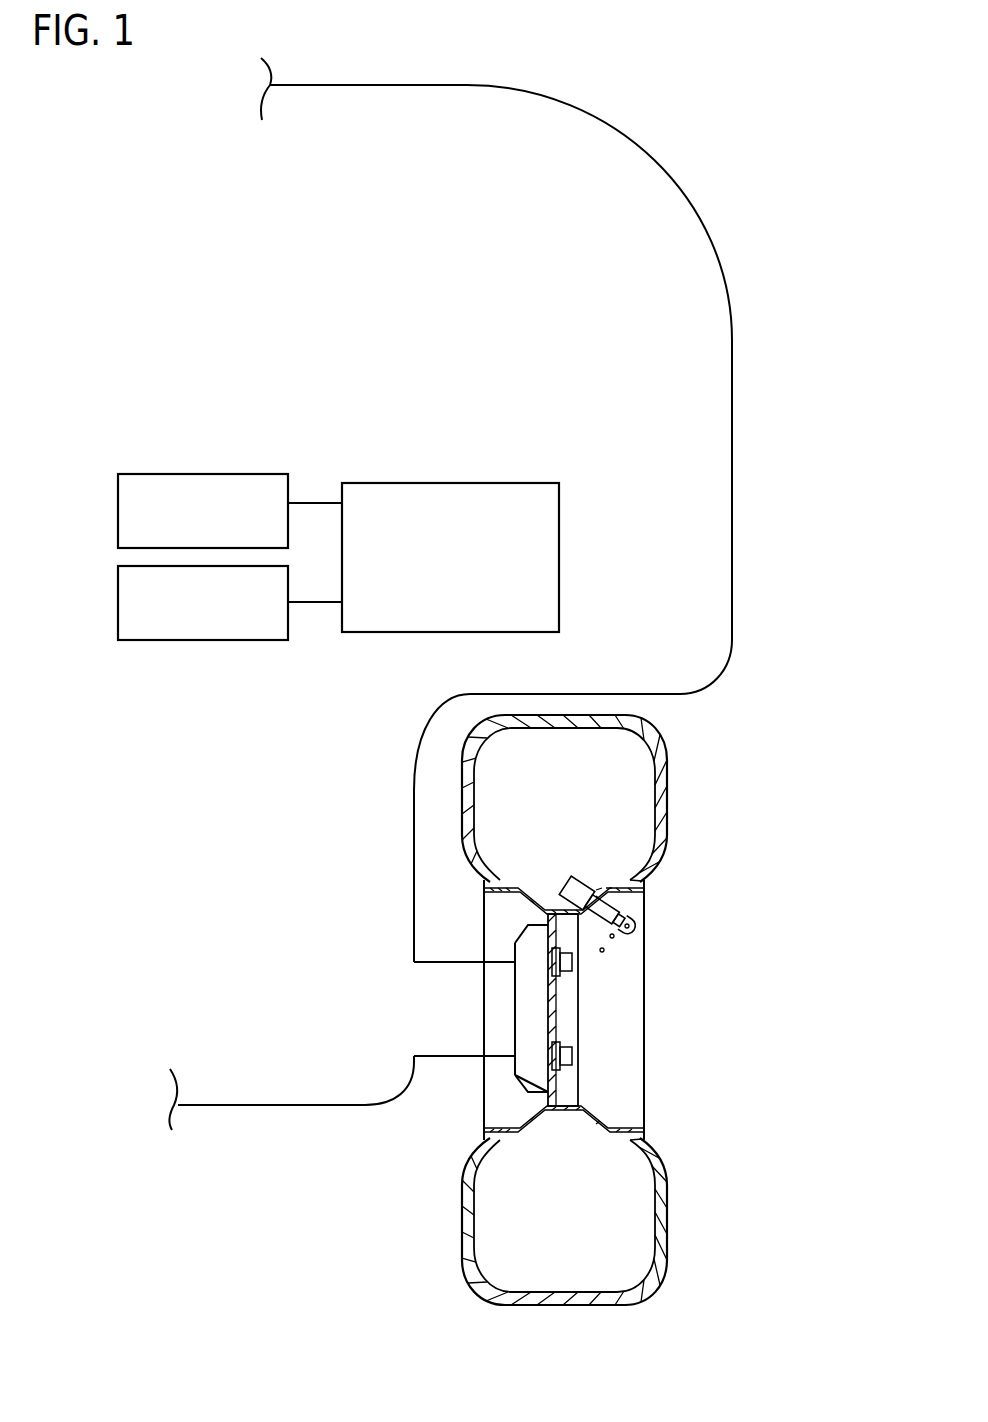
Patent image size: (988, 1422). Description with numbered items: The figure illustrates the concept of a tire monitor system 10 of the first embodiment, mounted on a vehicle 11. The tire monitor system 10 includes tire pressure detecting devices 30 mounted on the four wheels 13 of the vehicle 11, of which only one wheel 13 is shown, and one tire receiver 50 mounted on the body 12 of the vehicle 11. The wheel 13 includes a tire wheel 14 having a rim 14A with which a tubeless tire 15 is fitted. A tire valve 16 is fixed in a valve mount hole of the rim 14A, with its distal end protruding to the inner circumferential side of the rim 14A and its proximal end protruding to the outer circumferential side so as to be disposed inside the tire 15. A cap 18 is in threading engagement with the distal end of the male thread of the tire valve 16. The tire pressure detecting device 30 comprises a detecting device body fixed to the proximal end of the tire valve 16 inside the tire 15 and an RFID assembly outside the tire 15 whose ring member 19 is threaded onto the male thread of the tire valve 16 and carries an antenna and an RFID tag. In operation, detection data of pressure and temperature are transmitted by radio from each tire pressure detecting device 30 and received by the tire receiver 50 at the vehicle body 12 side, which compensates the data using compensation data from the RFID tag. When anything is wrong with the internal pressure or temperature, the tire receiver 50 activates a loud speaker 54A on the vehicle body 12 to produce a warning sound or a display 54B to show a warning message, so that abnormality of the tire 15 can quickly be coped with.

The vehicle 11 is at (766, 181).
The body 12 is at (738, 500).
The tire monitor system 10 is at (808, 605).
The tire receiver 50 is at (577, 613).
The tire pressure detecting device 30 is at (580, 879).
The loud speaker 54A is at (118, 491).
The display 54B is at (118, 599).
The wheel 13 is at (798, 1115).
The tire wheel 14 is at (647, 1093).
The rim 14A is at (630, 893).
The tubeless tire 15 is at (660, 1187).
The tire valve 16 is at (612, 936).
The cap 18 is at (630, 928).
The ring member 19 is at (602, 952).